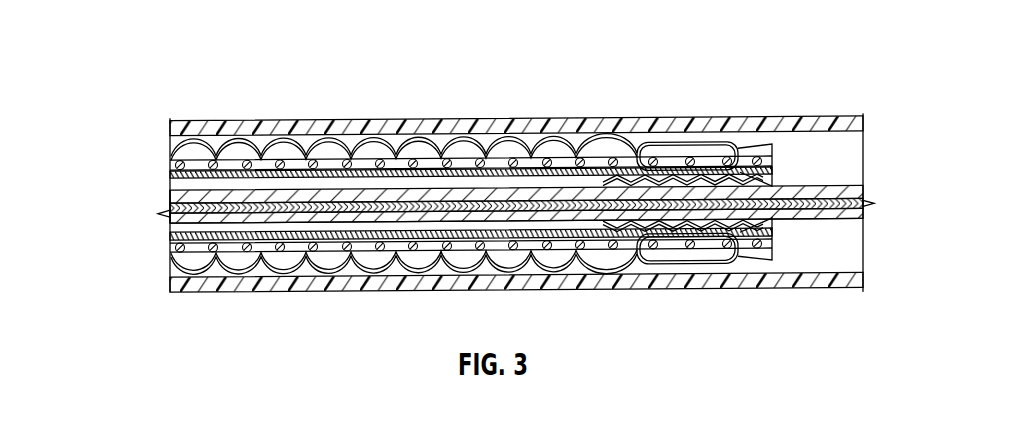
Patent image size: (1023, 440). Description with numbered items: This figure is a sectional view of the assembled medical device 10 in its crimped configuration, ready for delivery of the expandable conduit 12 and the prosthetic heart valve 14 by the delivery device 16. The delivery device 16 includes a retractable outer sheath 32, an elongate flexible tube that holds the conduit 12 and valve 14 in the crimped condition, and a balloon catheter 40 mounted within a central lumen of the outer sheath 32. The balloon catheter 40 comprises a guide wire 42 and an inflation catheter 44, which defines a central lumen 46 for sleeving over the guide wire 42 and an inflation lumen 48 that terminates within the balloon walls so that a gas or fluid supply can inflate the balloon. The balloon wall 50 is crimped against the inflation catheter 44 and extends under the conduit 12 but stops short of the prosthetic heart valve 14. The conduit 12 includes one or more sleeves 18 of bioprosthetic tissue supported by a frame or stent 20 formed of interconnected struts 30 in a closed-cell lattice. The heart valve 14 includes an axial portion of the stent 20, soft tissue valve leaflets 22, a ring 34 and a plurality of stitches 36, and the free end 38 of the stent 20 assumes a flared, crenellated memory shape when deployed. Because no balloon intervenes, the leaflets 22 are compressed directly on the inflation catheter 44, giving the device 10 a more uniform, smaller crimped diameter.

The medical device 10 is at (641, 79).
The expandable conduit 12 is at (363, 142).
The prosthetic heart valve 14 is at (760, 130).
The delivery device 16 is at (763, 288).
The sleeve 18 is at (472, 141).
The frame or stent 20 is at (238, 158).
The soft tissue valve leaflets 22 is at (760, 178).
The struts 30 is at (190, 141).
The outer sheath 32 is at (592, 282).
The ring 34 is at (707, 250).
The stitches 36 is at (693, 143).
The free end 38 is at (742, 148).
The balloon catheter 40 is at (860, 187).
The guide wire 42 is at (870, 209).
The inflation catheter 44 is at (170, 191).
The central lumen 46 is at (400, 207).
The inflation lumen 48 is at (170, 221).
The balloon wall 50 is at (415, 160).